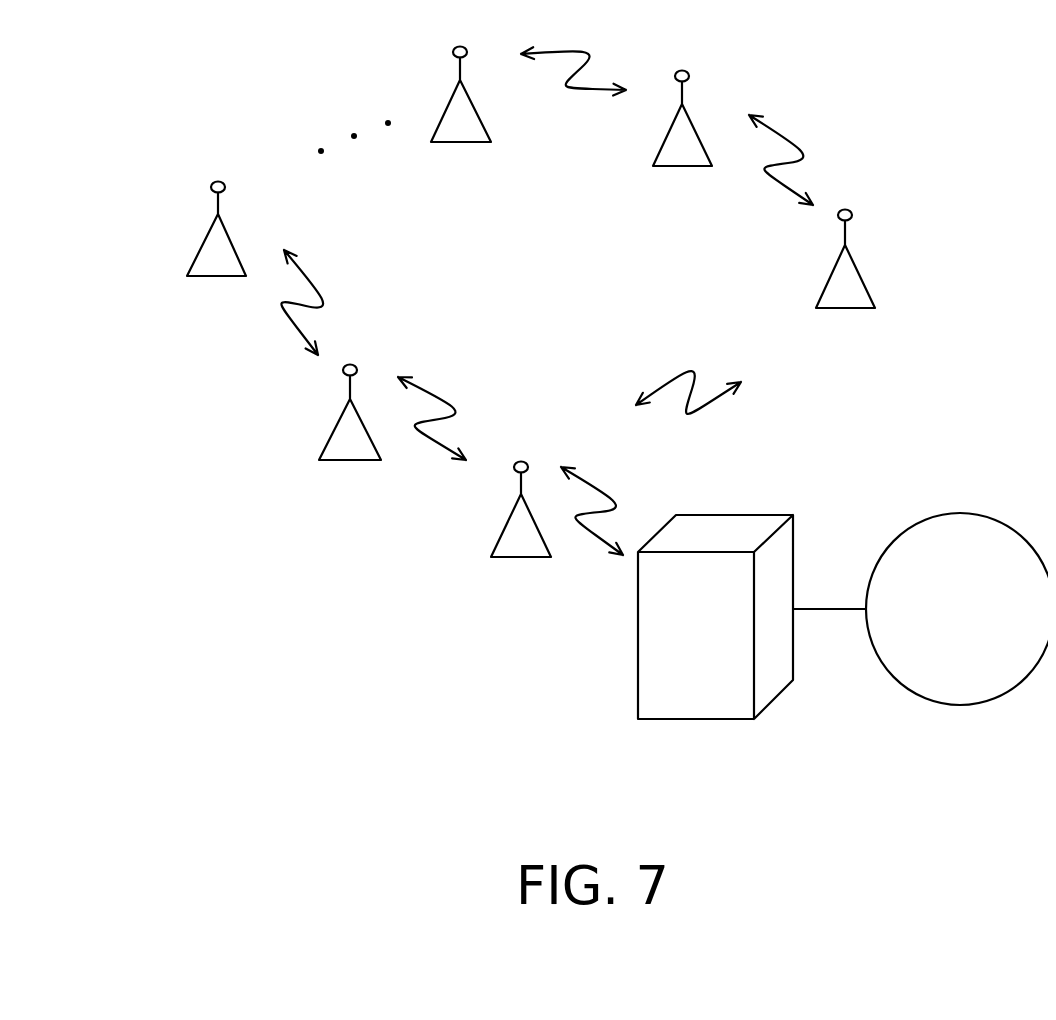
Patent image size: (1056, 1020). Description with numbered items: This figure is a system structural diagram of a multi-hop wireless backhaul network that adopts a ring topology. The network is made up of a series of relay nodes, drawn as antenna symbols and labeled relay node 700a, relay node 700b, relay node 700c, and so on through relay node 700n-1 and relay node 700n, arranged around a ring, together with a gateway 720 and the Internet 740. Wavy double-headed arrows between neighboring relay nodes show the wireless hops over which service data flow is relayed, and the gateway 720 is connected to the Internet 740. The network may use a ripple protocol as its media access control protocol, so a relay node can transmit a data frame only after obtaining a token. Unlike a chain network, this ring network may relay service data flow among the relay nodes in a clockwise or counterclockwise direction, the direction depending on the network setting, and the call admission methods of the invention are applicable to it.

The relay node 700n-1 is at (459, 140).
The relay node 700n is at (681, 164).
The relay node 700c is at (217, 274).
The relay node 700b is at (349, 458).
The relay node 700a is at (520, 555).
The gateway 720 is at (695, 717).
The Internet 740 is at (958, 703).